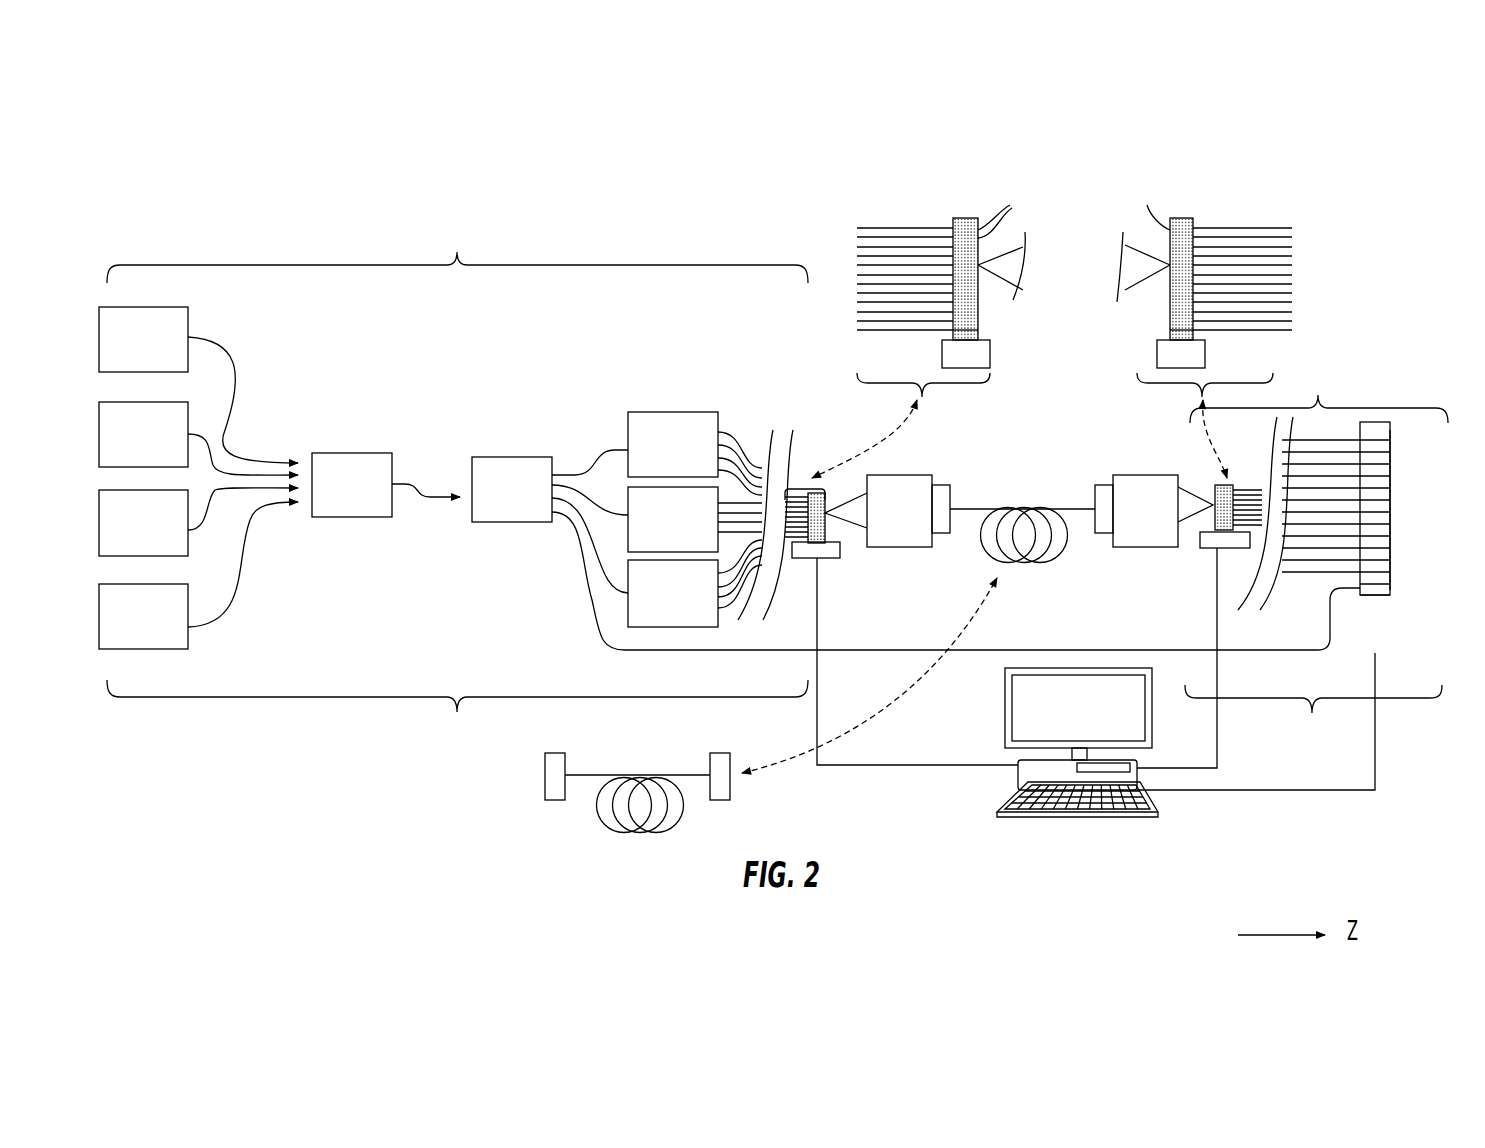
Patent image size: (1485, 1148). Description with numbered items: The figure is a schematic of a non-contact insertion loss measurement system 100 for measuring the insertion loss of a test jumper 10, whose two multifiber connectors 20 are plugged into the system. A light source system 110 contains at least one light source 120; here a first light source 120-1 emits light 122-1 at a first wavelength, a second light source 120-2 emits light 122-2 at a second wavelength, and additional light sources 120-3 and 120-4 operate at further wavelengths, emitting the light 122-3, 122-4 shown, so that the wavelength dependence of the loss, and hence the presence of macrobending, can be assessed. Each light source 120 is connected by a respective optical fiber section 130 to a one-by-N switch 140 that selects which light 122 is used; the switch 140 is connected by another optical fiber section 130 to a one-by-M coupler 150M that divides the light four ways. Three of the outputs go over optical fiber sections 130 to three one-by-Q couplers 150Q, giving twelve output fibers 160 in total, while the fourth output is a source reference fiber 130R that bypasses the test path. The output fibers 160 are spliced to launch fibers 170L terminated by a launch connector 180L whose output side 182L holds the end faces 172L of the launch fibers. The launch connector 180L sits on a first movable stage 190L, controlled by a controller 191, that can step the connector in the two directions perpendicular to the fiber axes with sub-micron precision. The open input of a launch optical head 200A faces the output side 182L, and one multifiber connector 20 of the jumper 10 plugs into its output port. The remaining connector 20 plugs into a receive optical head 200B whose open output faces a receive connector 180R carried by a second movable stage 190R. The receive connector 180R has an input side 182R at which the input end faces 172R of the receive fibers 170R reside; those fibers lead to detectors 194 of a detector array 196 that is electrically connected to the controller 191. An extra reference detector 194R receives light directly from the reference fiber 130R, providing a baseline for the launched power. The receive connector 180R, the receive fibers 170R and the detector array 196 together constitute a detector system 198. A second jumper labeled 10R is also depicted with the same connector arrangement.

The non-contact insertion loss measurement system 100 is at (1192, 122).
The light source system 110 is at (457, 465).
The light source 120 is at (166, 422).
The first light source 120-1 is at (172, 355).
The second light source 120-2 is at (172, 450).
The additional light source 120-3 is at (172, 536).
The additional light source 120-4 is at (172, 630).
The light 122 is at (324, 414).
The light of first wavelength 122-1 is at (296, 472).
The light of second wavelength 122-2 is at (293, 460).
The third optical fiber link 122-3 is at (299, 506).
The fourth optical fiber link 122-4 is at (292, 500).
The optical fiber section 130 is at (215, 435).
The source reference fiber 130R is at (588, 610).
The 1×N switch 140 is at (368, 500).
The 1×M coupler 150M is at (538, 503).
The 1×Q coupler 150Q is at (698, 458).
The output fibers 160 is at (742, 428).
The launch fibers 170L is at (790, 490).
The receive optical fibers 170R is at (1247, 490).
The end faces 172L is at (1010, 205).
The input end faces 172R is at (1147, 205).
The launch connector 180L is at (832, 495).
The receive connector 180R is at (1217, 486).
The output side 182L is at (978, 332).
The input side 182R is at (1170, 333).
The first movable stage 190L is at (828, 556).
The second movable stage 190R is at (1210, 540).
The controller 191 is at (1095, 722).
The detectors 194 is at (1385, 422).
The reference detector 194R is at (1370, 596).
The detector array 196 is at (1400, 474).
The detector system 198 is at (1316, 571).
The launch optical head 200A is at (922, 525).
The receive optical head 200B is at (1168, 525).
The jumper 10 is at (1025, 472).
The reference optical fiber 10R is at (588, 812).
The multifiber connector 20 is at (950, 487).